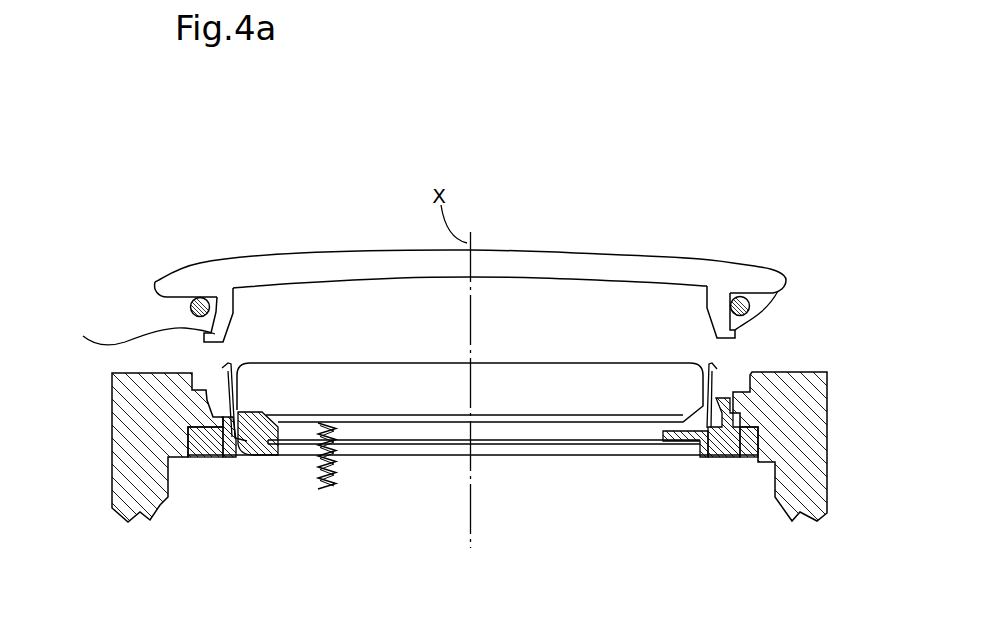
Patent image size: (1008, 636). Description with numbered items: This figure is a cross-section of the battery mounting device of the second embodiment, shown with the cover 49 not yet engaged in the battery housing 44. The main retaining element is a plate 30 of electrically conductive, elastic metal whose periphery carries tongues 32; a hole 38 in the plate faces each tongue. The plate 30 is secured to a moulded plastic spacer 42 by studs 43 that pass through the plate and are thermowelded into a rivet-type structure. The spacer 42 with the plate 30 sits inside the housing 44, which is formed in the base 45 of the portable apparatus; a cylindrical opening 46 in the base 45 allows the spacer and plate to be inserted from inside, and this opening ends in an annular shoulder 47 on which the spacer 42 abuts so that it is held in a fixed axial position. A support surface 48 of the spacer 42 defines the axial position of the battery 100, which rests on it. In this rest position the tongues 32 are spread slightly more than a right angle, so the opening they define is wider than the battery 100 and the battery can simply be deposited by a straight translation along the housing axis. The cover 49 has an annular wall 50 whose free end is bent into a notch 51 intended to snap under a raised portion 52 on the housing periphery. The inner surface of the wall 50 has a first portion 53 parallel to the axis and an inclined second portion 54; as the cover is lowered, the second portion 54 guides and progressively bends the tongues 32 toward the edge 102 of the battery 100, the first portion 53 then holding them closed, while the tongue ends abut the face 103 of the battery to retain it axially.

The plate 30 is at (423, 448).
The tongues 32 is at (215, 380).
The hole 38 is at (253, 432).
The spacer 42 is at (705, 457).
The studs 43 is at (270, 456).
The battery housing 44 is at (765, 336).
The base 45 is at (818, 446).
The cylindrical opening 46 is at (544, 521).
The annular shoulder 47 is at (195, 430).
The support surface 48 is at (268, 418).
The cover 49 is at (528, 263).
The annular wall 50 is at (220, 304).
The notch 51 is at (797, 207).
The raised portion 52 is at (222, 456).
The first portion 53 is at (240, 288).
The second portion 54 is at (242, 314).
The battery 100 is at (592, 377).
The edge 102 is at (720, 365).
The face 103 is at (552, 362).